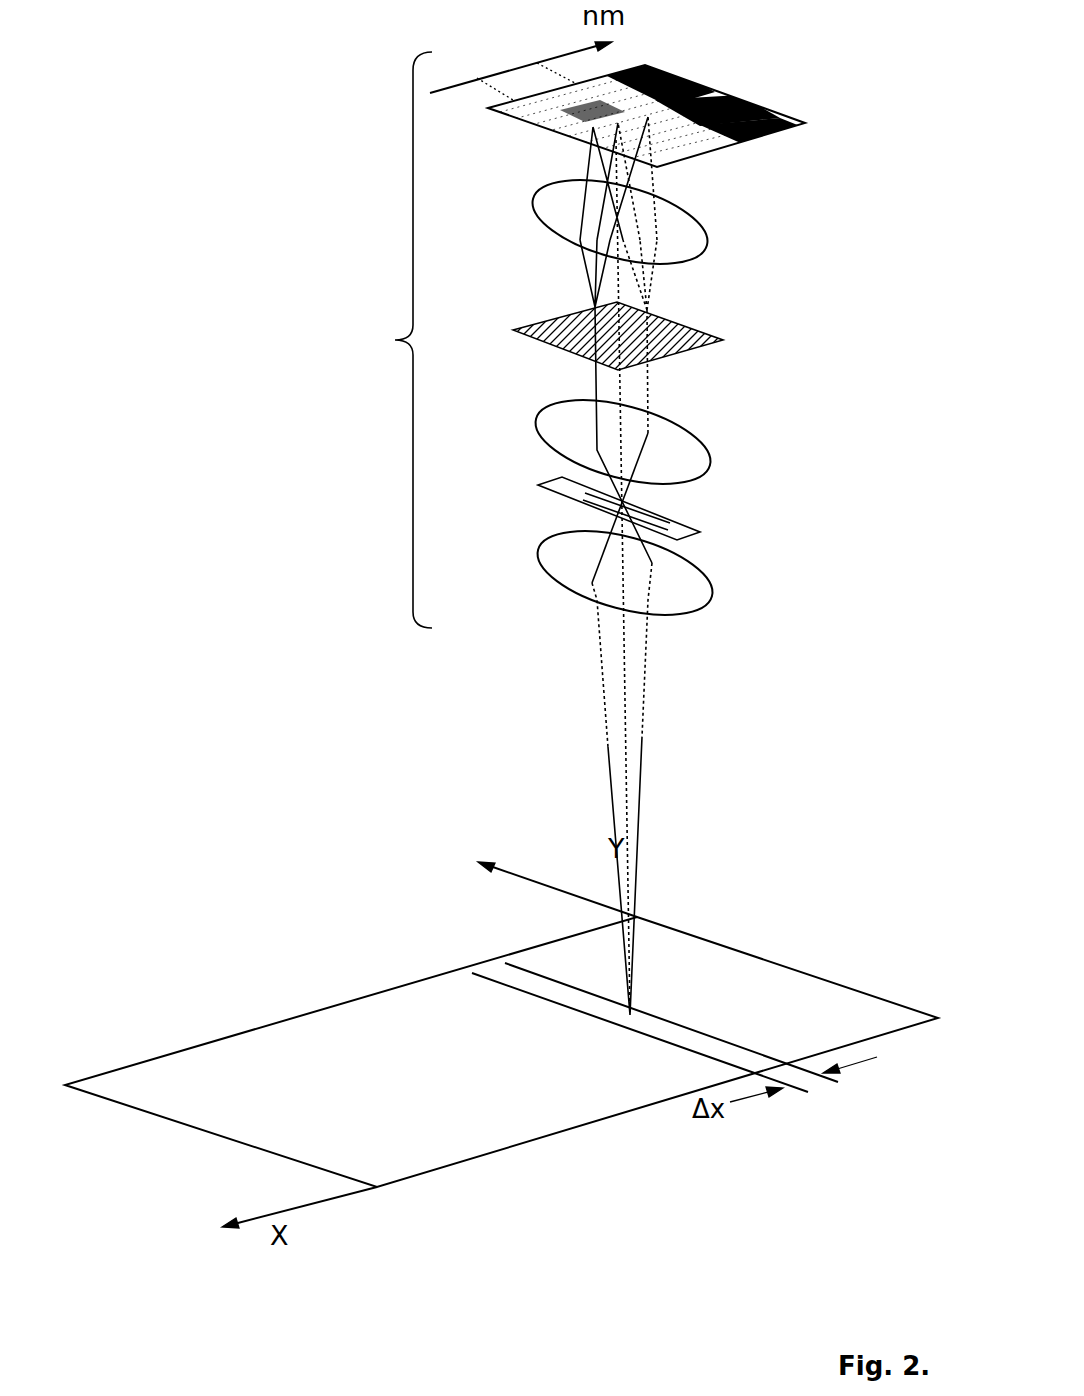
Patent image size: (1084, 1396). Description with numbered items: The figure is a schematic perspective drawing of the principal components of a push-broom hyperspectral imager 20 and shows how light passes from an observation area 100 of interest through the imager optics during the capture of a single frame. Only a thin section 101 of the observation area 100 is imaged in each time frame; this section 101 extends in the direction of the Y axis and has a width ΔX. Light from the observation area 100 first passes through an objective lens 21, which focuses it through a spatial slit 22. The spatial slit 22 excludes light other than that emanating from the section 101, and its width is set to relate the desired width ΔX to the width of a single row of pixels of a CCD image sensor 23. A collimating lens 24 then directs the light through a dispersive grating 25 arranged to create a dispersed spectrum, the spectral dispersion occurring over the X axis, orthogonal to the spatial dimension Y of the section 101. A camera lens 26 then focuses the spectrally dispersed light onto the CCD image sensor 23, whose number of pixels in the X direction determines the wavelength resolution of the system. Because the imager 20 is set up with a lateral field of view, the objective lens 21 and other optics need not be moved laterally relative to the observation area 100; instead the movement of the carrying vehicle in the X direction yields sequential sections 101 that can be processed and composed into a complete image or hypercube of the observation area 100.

The hyperspectral imager 20 is at (391, 340).
The objective lens 21 is at (692, 592).
The spatial slit 22 is at (690, 525).
The CCD image sensor 23 is at (733, 92).
The collimating lens 24 is at (680, 442).
The dispersive grating 25 is at (698, 327).
The camera lens 26 is at (693, 238).
The observation area 100 is at (332, 1042).
The section 101 is at (745, 1060).